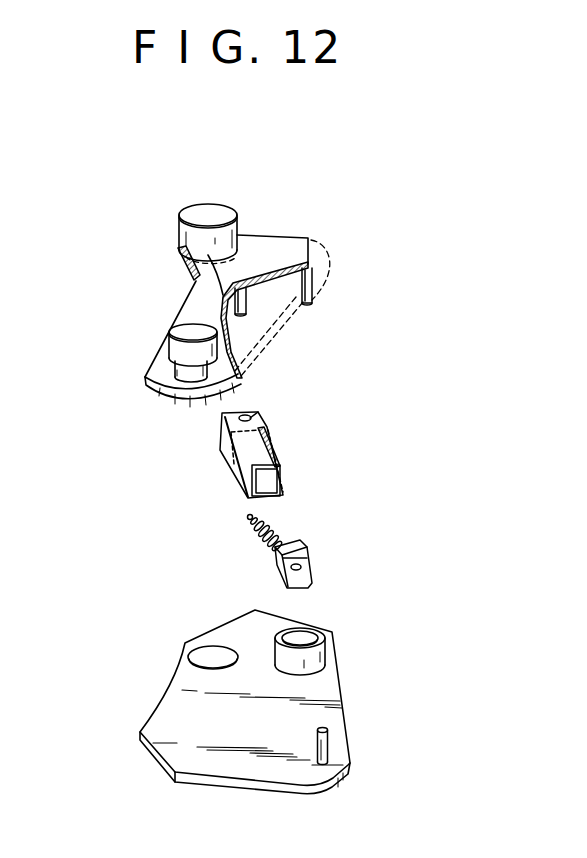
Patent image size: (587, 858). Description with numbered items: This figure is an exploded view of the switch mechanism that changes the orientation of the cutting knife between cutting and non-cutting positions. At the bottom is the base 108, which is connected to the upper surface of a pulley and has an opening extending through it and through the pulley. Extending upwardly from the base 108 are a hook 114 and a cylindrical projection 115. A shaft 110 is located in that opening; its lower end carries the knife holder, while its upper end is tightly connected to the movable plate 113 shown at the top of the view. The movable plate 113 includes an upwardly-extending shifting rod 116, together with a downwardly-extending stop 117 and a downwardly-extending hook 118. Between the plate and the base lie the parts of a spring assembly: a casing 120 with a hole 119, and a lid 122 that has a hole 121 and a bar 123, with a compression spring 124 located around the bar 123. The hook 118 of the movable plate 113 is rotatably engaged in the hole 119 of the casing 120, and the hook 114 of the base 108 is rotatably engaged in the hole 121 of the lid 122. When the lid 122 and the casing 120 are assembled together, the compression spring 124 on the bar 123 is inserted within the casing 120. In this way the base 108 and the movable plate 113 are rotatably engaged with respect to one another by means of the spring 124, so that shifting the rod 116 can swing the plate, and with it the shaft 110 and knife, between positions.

The base 108 is at (330, 690).
The shaft 110 is at (178, 226).
The movable plate 113 is at (270, 247).
The hook 114 is at (330, 740).
The cylindrical projection 115 is at (325, 652).
The shifting rod 116 is at (173, 351).
The stop 117 is at (312, 303).
The hook 118 is at (248, 302).
The hole 119 is at (247, 407).
The casing 120 is at (225, 465).
The hole 121 is at (307, 558).
The lid 122 is at (278, 582).
The bar 123 is at (250, 517).
The compression spring 124 is at (260, 542).